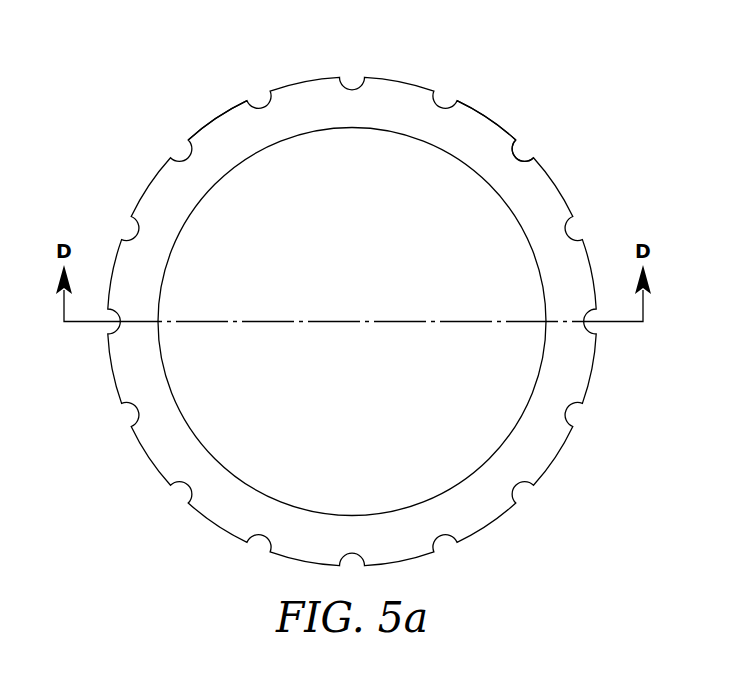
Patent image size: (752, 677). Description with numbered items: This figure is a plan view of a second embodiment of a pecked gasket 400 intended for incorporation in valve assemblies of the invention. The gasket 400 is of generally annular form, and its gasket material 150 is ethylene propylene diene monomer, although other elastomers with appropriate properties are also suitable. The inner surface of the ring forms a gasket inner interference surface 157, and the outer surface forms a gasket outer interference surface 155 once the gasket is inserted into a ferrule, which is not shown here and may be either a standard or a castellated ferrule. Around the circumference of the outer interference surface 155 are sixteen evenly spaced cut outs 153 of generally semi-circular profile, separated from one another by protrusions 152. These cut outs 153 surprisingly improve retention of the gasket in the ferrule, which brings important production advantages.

The pecked gasket 400 is at (214, 25).
The gasket material 150 is at (393, 98).
The protrusions 152 is at (487, 128).
The cut outs 153 is at (525, 149).
The gasket outer interference surface 155 is at (200, 113).
The gasket inner interference surface 157 is at (201, 220).